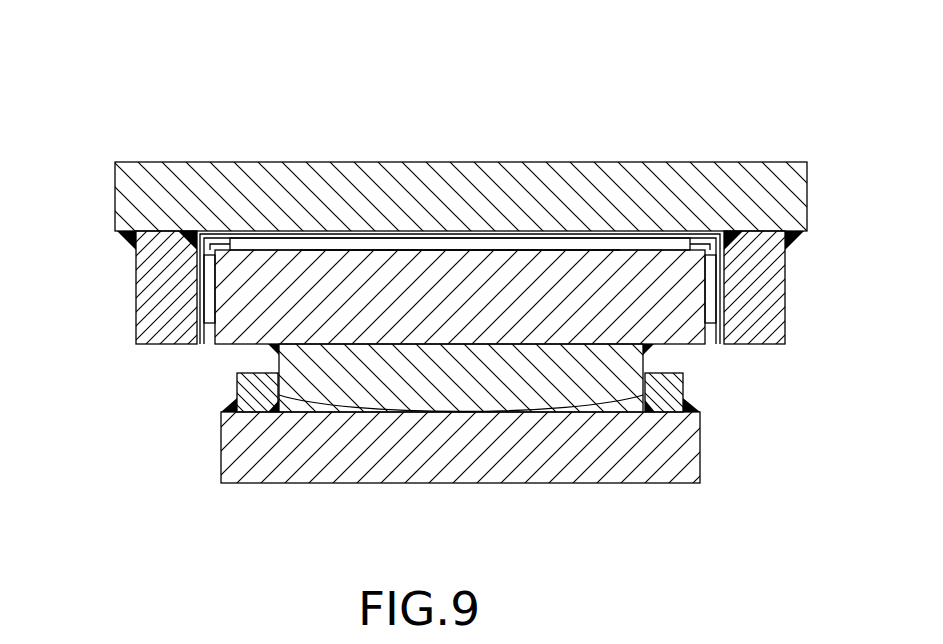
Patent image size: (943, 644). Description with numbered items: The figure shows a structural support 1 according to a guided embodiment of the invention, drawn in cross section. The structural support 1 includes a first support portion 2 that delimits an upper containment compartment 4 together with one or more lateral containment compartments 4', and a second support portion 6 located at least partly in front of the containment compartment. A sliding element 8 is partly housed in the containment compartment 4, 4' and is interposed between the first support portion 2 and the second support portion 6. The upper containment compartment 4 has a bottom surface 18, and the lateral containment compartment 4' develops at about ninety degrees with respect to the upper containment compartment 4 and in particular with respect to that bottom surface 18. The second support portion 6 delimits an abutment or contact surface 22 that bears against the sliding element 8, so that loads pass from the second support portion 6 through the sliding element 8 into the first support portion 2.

The structural support 1 is at (156, 78).
The first support portion 2 is at (700, 352).
The upper containment compartment 4 is at (460, 205).
The lateral containment compartment 4' is at (374, 344).
The second support portion 6 is at (692, 156).
The sliding element 8 is at (371, 244).
The bottom surface 18 is at (578, 249).
The abutment surface 22 is at (437, 238).